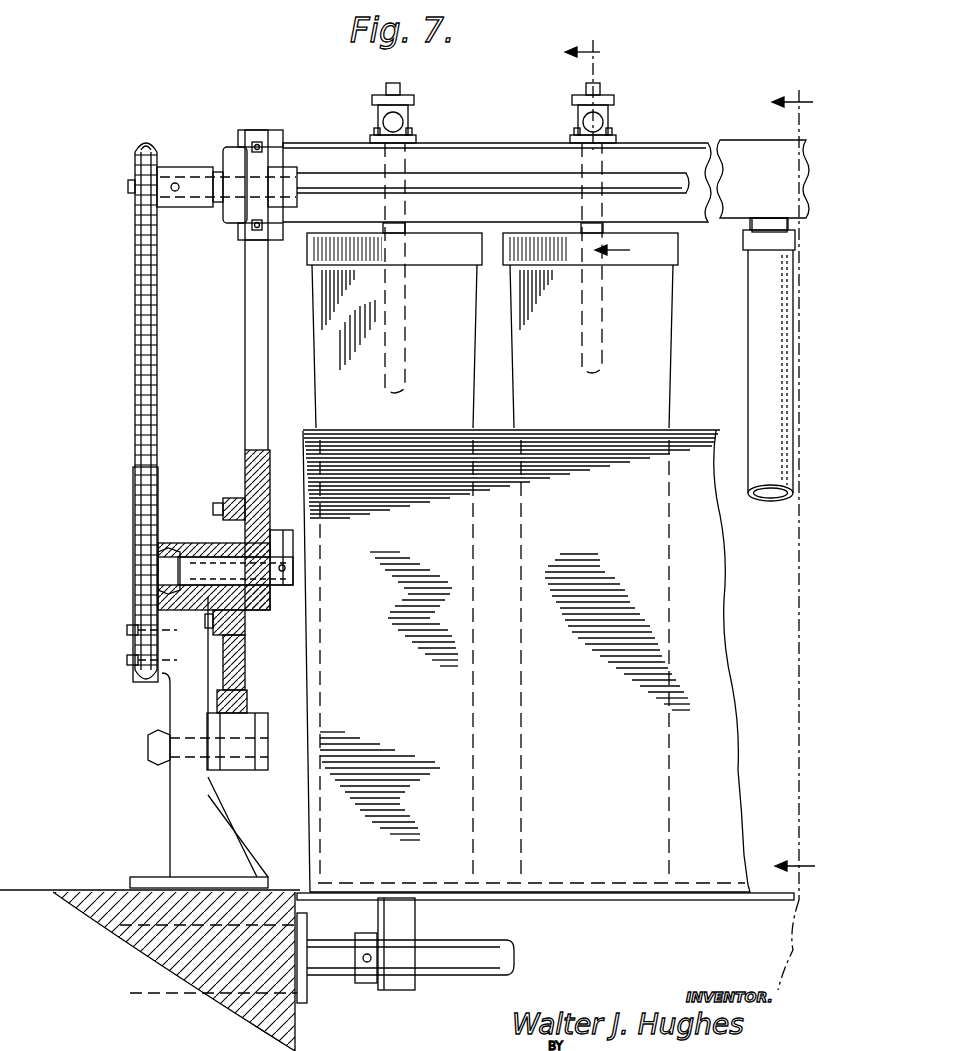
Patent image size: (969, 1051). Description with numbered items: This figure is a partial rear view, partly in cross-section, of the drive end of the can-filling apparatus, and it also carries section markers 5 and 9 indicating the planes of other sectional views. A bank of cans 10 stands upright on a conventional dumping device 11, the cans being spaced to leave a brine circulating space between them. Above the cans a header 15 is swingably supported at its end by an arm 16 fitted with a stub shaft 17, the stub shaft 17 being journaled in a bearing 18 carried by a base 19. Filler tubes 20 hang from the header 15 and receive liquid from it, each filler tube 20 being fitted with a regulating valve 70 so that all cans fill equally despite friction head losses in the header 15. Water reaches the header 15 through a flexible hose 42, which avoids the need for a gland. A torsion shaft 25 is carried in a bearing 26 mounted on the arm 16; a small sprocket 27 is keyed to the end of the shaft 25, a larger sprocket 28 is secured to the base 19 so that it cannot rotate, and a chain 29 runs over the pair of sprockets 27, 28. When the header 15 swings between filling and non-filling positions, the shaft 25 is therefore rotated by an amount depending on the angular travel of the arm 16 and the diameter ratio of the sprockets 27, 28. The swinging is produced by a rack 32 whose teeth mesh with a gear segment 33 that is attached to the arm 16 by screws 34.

The section line 5- 5 is at (793, 526).
The section line 9- 9 is at (606, 151).
The can 10 is at (330, 389).
The dumping device 11 is at (582, 730).
The header 15 is at (658, 148).
The arm 16 is at (252, 308).
The stub shaft 17 is at (212, 560).
The bearing 18 is at (200, 562).
The base 19 is at (178, 792).
The filler tube 20 is at (397, 340).
The torsion shaft 25 is at (467, 178).
The bearing 26 is at (252, 167).
The small sprocket 27 is at (135, 165).
The larger sprocket 28 is at (137, 542).
The chain 29 is at (138, 345).
The rack 32 is at (249, 710).
The gear segment 33 is at (237, 660).
The screws 34 is at (227, 505).
The flexible hose 42 is at (757, 316).
The regulating valve 70 is at (372, 116).